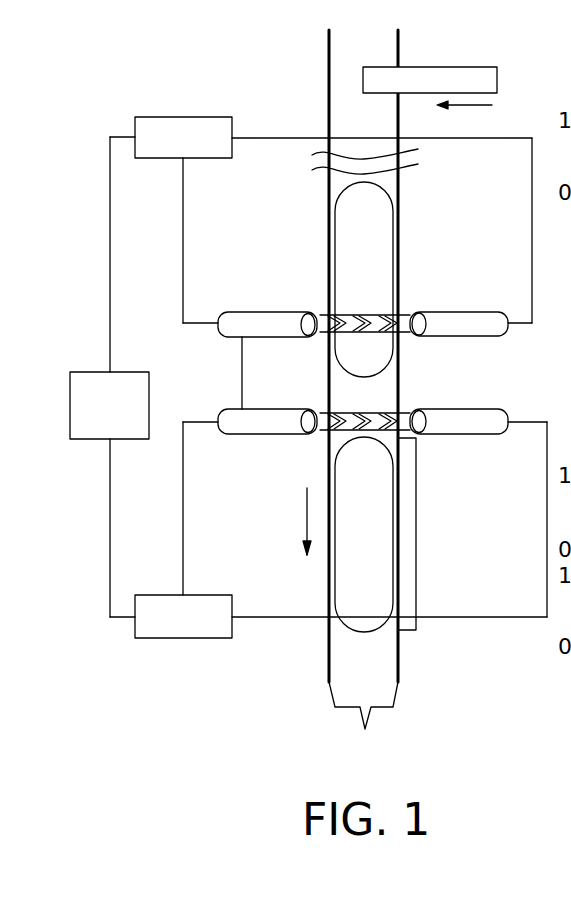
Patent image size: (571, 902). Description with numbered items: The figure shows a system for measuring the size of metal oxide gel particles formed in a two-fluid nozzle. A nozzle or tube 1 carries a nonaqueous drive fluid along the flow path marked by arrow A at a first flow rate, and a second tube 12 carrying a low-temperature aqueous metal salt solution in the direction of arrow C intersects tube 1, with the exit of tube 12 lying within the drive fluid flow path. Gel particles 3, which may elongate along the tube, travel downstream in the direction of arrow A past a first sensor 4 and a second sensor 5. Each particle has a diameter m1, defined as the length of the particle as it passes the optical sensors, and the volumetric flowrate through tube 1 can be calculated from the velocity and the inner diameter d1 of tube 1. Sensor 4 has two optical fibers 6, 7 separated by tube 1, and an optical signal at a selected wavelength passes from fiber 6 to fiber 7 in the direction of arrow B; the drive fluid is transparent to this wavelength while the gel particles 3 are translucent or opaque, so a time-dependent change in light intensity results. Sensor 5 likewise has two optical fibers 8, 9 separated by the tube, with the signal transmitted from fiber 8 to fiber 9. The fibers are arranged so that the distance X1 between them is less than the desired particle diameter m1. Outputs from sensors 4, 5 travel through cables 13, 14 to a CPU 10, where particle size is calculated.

The nozzle or tube 1 is at (326, 52).
The gel particles 3 is at (400, 222).
The first sensor 4 is at (173, 117).
The second sensor 5 is at (178, 638).
The optical fiber 6 is at (268, 312).
The optical fiber 7 is at (485, 312).
The optical fiber 8 is at (255, 435).
The optical fiber 9 is at (488, 408).
The CPU 10 is at (82, 372).
The tube 12 is at (461, 67).
The cable 13 is at (112, 243).
The cable 14 is at (112, 520).
The arrow A is at (297, 521).
The arrow B is at (356, 342).
The arrow C is at (464, 117).
The distance X1 is at (242, 373).
The diameter m1 is at (416, 534).
The inner diameter d1 is at (365, 752).